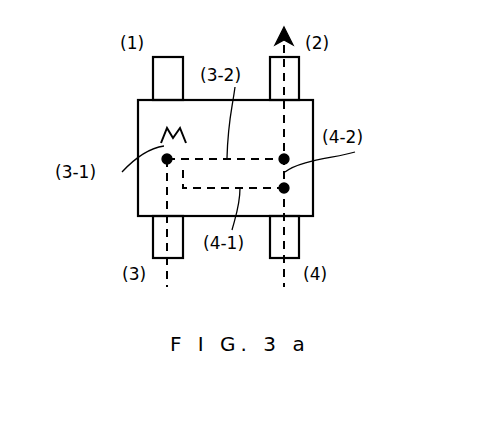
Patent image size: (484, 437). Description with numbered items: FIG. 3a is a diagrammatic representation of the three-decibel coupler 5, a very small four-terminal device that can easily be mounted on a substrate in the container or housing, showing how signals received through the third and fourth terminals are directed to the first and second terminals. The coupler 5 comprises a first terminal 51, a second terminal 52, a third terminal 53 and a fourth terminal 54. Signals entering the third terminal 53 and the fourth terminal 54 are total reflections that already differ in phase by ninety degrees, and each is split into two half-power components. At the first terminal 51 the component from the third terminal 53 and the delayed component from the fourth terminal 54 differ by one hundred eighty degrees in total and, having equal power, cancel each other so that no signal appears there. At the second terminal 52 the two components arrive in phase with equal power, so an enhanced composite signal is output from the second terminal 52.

The 3 dB coupler 5 is at (138, 135).
The first terminal 51 is at (152, 78).
The second terminal 52 is at (300, 80).
The third terminal 53 is at (153, 235).
The fourth terminal 54 is at (299, 235).